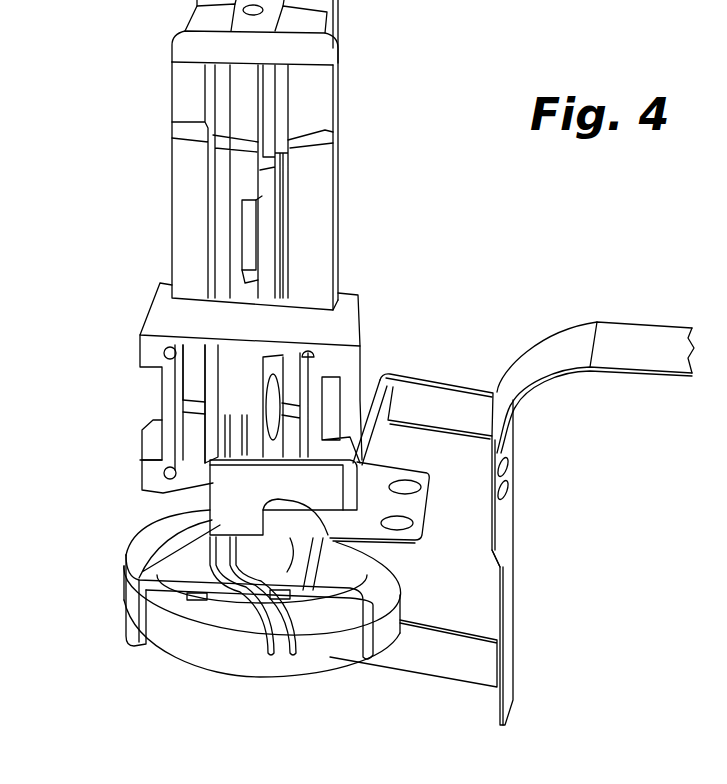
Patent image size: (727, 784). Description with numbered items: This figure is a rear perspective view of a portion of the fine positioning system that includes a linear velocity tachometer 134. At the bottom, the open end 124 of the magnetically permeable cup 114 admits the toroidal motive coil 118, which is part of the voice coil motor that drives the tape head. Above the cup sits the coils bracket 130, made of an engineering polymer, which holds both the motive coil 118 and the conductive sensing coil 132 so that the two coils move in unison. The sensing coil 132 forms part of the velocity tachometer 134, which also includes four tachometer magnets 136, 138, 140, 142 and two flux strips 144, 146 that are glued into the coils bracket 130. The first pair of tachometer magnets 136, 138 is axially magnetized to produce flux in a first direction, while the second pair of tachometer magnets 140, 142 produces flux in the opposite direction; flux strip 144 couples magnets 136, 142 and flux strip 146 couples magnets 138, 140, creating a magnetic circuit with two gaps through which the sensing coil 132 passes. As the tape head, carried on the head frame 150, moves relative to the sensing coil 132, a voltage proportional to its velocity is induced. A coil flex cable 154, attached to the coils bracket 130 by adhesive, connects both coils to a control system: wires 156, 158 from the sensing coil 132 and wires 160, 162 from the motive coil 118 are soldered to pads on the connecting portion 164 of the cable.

The cup 114 is at (134, 540).
The motive coil 118 is at (170, 652).
The open end 124 is at (200, 685).
The coils bracket 130 is at (343, 293).
The sensing coil 132 is at (250, 343).
The velocity tachometer 134 is at (98, 373).
The tachometer magnet 136 is at (188, 363).
The tachometer magnet 138 is at (290, 373).
The tachometer magnet 140 is at (290, 440).
The tachometer magnet 142 is at (195, 443).
The flux strip 144 is at (178, 390).
The flux strip 146 is at (307, 402).
The head frame 150 is at (300, 212).
The coil flex cable 154 is at (478, 385).
The wire 156 is at (245, 443).
The wire 158 is at (213, 483).
The wire 160 is at (267, 637).
The wire 162 is at (286, 655).
The connecting portion 164 is at (140, 583).